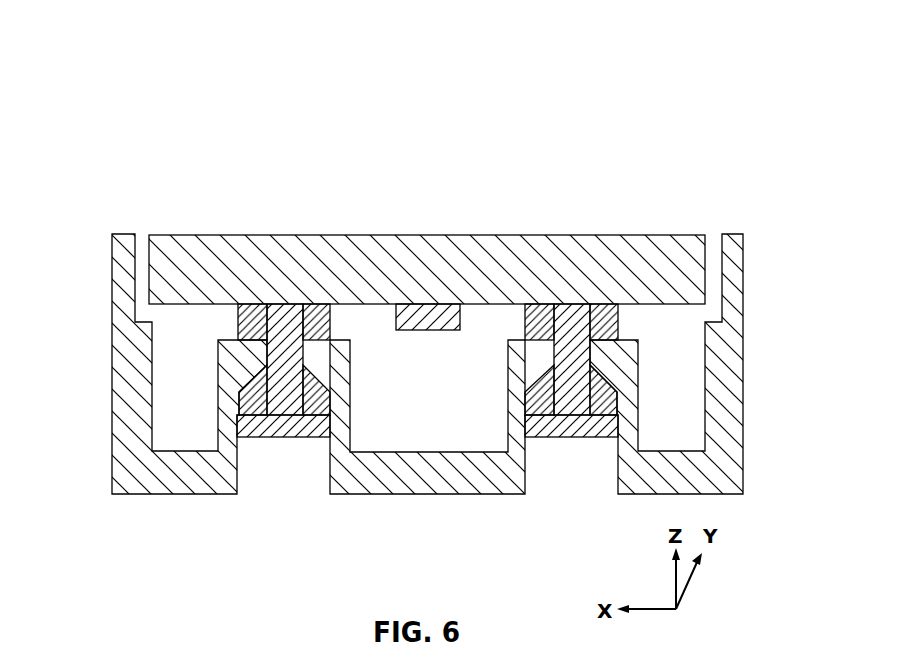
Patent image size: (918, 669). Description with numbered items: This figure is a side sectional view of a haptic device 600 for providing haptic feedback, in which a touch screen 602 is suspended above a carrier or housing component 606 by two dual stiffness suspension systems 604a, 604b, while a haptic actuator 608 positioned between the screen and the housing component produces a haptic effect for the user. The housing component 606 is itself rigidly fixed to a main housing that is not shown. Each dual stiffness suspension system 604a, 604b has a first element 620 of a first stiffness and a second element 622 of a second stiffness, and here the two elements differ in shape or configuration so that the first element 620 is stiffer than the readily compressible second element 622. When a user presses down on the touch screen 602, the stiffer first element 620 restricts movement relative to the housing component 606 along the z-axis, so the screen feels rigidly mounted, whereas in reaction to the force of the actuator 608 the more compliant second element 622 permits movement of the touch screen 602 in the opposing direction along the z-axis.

The haptic device 600 is at (132, 100).
The touch screen 602 is at (502, 255).
The dual stiffness suspension system 604a is at (226, 316).
The dual stiffness suspension system 604b is at (627, 315).
The housing component 606 is at (128, 280).
The haptic actuator 608 is at (423, 317).
The first element 620 is at (238, 333).
The second element 622 is at (247, 413).